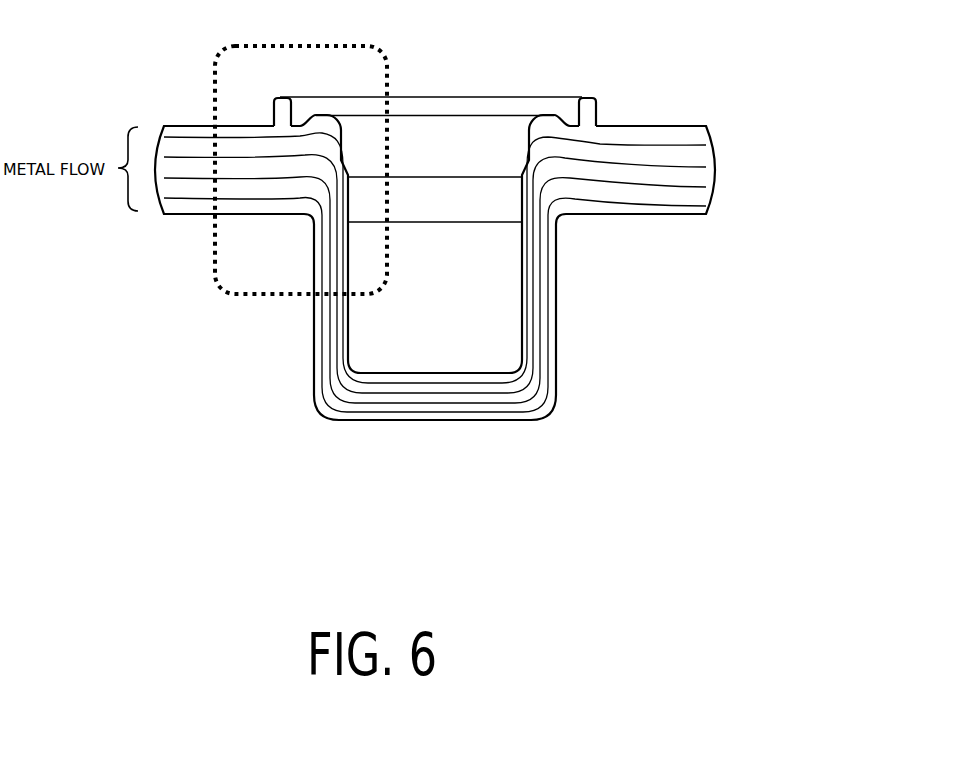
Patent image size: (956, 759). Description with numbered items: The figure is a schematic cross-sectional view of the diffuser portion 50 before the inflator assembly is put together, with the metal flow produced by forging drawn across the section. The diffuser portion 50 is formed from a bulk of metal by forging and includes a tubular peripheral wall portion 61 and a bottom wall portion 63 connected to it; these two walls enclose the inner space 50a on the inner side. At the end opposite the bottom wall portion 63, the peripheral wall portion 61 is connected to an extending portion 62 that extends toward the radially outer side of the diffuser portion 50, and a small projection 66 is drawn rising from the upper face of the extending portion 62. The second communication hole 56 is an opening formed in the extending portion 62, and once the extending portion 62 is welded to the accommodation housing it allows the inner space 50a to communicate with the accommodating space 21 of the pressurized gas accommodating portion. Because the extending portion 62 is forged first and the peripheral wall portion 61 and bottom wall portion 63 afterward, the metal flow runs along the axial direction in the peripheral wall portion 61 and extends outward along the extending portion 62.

The accommodating space 21 is at (520, 38).
The diffuser portion 50 is at (658, 474).
The inner space 50a is at (487, 336).
The second communication hole 56 is at (482, 156).
The peripheral wall portion 61 is at (557, 337).
The extending portion 62 is at (670, 187).
The bottom wall portion 63 is at (505, 416).
The protrusion 66 is at (553, 116).